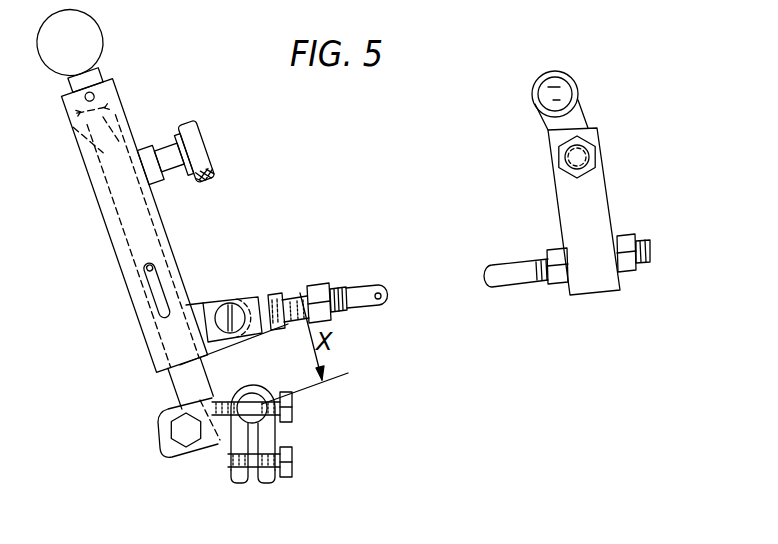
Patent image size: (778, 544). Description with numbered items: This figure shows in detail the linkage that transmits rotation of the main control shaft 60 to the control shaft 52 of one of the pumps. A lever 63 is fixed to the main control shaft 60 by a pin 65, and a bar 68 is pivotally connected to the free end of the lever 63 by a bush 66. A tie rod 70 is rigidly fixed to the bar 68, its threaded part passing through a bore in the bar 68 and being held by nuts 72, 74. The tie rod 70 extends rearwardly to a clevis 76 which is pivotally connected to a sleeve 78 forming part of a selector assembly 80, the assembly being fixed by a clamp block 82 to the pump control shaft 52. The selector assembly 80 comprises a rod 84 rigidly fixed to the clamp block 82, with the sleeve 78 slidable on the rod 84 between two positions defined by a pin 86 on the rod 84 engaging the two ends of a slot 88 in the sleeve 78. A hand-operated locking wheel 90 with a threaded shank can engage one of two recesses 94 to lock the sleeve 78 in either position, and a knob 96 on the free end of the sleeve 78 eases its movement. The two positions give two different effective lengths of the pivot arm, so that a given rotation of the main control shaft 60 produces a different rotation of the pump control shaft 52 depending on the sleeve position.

The control shaft 52 is at (268, 426).
The main control shaft 60 is at (567, 79).
The lever 63 is at (575, 112).
The pin 65 is at (536, 75).
The bush 66 is at (560, 155).
The bar 68 is at (593, 198).
The tie rod 70 is at (497, 263).
The nut 72 is at (557, 287).
The nut 74 is at (632, 272).
The clevis 76 is at (255, 295).
The sleeve 78 is at (163, 237).
The selector assembly 80 is at (125, 263).
The clamp block 82 is at (232, 443).
The rod 84 is at (175, 382).
The pin 86 is at (146, 271).
The slot 88 is at (165, 289).
The locking wheel 90 is at (212, 147).
The recesses 94 is at (96, 175).
The knob 96 is at (93, 35).